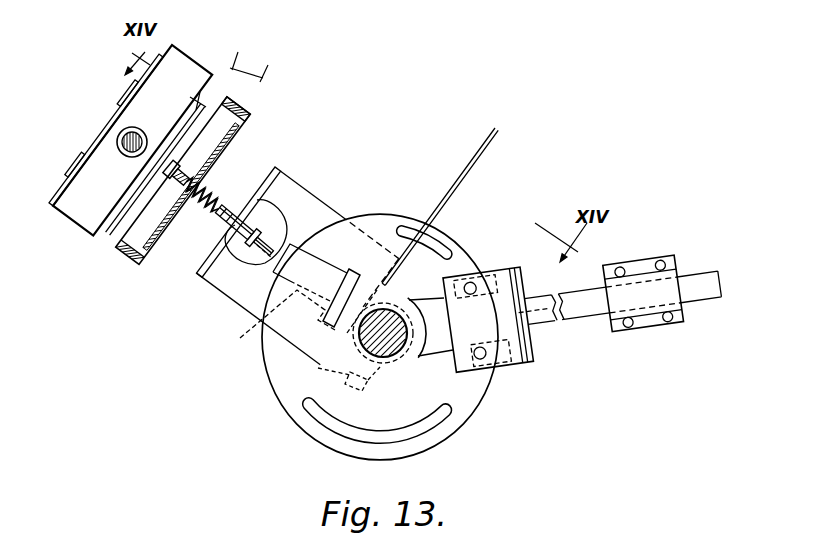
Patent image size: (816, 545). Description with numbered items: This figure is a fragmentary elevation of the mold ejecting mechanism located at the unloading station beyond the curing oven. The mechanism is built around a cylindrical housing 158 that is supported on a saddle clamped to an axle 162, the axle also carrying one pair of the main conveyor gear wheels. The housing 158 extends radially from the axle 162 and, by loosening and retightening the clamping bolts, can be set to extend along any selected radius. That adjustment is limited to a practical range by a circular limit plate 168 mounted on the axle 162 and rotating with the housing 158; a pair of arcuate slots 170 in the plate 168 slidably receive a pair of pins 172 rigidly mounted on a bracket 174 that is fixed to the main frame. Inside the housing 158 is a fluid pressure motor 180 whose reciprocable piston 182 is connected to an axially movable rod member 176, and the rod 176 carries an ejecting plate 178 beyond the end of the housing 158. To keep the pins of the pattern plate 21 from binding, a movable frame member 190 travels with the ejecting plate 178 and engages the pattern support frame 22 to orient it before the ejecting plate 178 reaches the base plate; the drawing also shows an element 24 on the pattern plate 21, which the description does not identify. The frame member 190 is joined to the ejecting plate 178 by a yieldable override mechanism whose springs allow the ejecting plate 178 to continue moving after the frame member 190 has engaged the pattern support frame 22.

The pattern plate 21 is at (115, 118).
The pattern support frame 22 is at (77, 212).
The pin 24 is at (118, 137).
The cylindrical housing 158 is at (290, 192).
The axle 162 is at (388, 355).
The circular limit plate 168 is at (390, 218).
The arcuate slots 170 is at (440, 245).
The pins 172 is at (470, 284).
The bracket 174 is at (534, 352).
The rod member 176 is at (245, 205).
The ejecting plate 178 is at (123, 227).
The fluid pressure motor 180 is at (240, 338).
The piston 182 is at (255, 258).
The frame member 190 is at (232, 102).